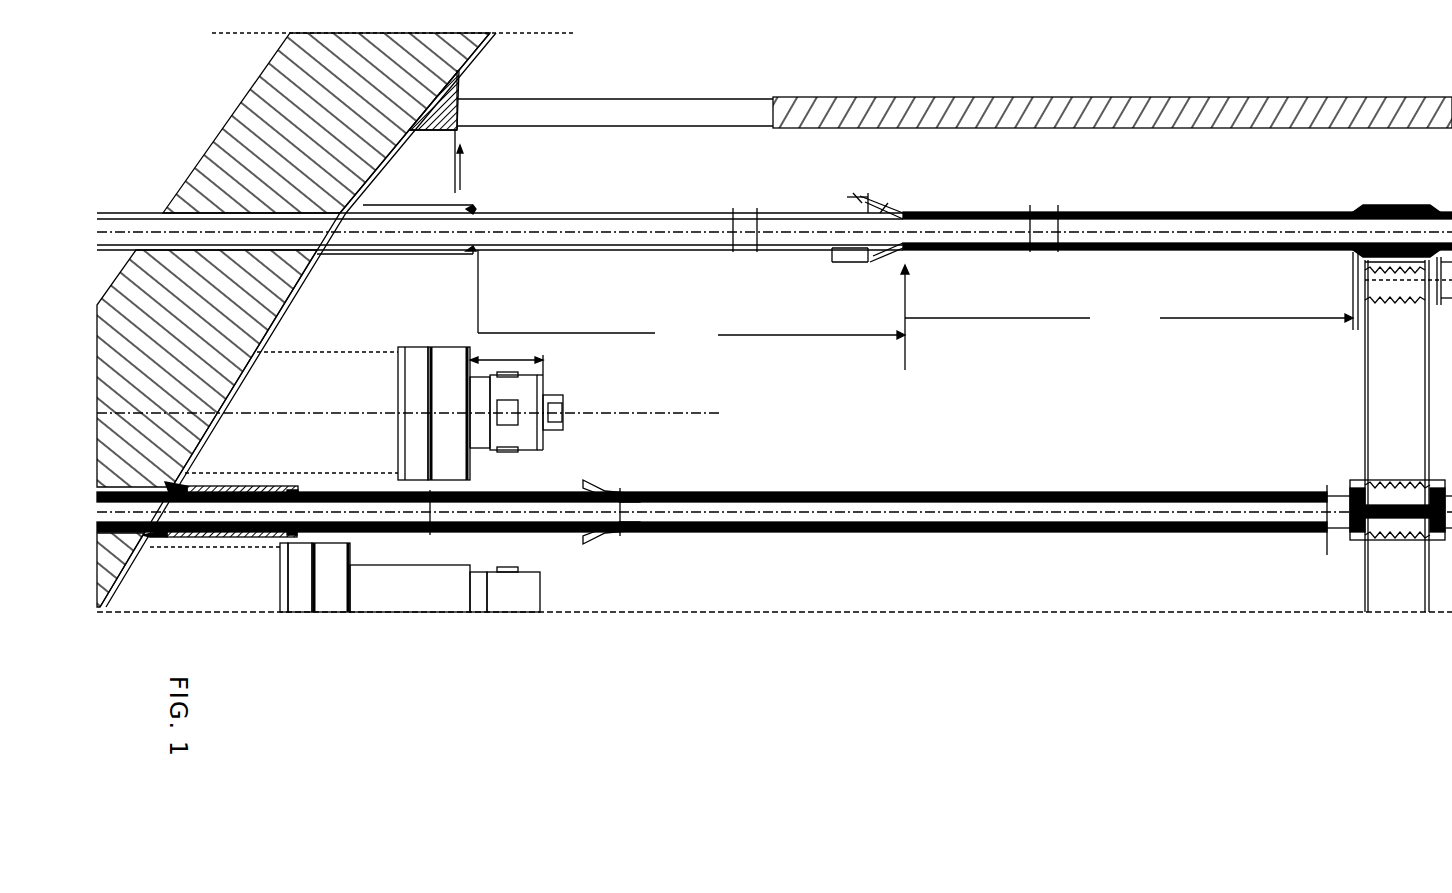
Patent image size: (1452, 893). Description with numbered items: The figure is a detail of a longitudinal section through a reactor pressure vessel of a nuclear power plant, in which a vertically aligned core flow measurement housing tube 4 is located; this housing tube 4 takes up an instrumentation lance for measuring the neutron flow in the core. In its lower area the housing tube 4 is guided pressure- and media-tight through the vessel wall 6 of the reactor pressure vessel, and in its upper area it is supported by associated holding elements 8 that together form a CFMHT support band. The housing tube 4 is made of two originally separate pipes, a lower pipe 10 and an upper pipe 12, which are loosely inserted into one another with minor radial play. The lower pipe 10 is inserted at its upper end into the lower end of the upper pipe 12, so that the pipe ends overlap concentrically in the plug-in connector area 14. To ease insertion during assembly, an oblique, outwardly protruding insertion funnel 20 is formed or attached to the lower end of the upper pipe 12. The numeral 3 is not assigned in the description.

The housing 3 is at (1097, 422).
The core flow measurement housing tube 4 is at (1150, 255).
The vessel wall 6 is at (282, 110).
The holding elements 8 is at (1378, 388).
The lower pipe 10 is at (618, 257).
The upper pipe 12 is at (1058, 245).
The plug-in connector area 14 is at (915, 325).
The insertion funnel 20 is at (866, 263).